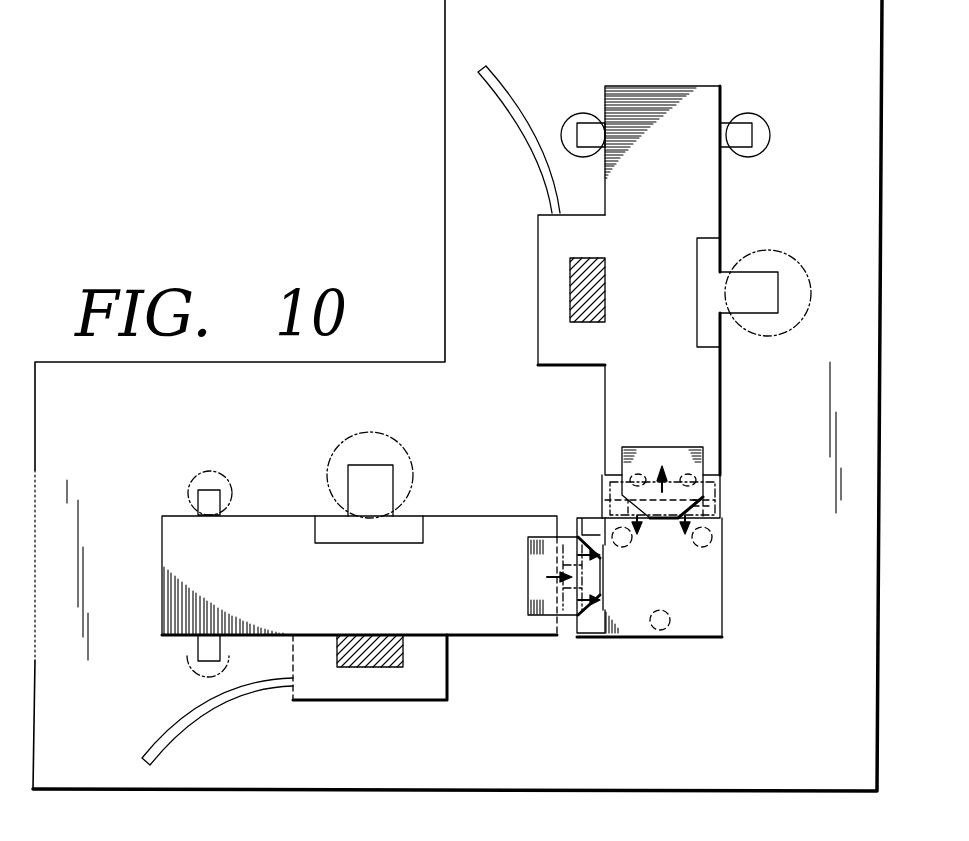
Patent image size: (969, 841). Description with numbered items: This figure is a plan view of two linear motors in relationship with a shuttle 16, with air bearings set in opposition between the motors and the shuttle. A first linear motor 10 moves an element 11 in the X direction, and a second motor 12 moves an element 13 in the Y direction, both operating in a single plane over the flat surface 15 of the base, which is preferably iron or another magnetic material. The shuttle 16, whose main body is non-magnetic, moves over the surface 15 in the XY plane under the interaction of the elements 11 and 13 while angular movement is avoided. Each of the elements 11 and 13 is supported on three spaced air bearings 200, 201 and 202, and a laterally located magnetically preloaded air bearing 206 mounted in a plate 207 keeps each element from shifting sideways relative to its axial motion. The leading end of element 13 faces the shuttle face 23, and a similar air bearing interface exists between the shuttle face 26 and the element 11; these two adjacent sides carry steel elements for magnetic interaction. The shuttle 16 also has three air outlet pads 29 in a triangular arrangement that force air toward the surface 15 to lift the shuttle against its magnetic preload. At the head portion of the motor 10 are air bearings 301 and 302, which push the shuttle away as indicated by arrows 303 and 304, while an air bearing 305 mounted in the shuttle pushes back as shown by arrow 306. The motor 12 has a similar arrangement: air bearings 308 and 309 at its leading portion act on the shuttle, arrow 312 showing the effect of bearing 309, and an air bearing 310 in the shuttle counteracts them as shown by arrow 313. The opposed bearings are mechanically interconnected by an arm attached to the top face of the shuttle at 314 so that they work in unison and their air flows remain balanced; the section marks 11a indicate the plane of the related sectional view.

The first linear motor 10 is at (290, 514).
The element 11 is at (560, 532).
The section line 11a is at (503, 576).
The second motor 12 is at (728, 197).
The element 13 is at (722, 467).
The flat surface 15 is at (832, 33).
The shuttle 16 is at (722, 634).
The face of the shuttle 23 is at (618, 502).
The face of the shuttle 26 is at (595, 632).
The air outlet pads 29 is at (661, 632).
The air bearing 200 is at (782, 237).
The air bearing 201 is at (583, 113).
The air bearing 202 is at (757, 114).
The magnetically preloaded air bearing 206 is at (570, 300).
The plate 207 is at (538, 243).
The air bearing 301 is at (575, 540).
The air bearing 302 is at (568, 622).
The arrow 303 is at (612, 556).
The arrow 304 is at (600, 582).
The air bearing 305 is at (606, 585).
The arrow 306 is at (547, 588).
The air bearing 308 is at (703, 492).
The air bearing 309 is at (604, 497).
The air bearing 310 is at (718, 512).
The arrow 312 is at (640, 508).
The arrow 313 is at (667, 482).
The arm connection point 314 is at (712, 533).